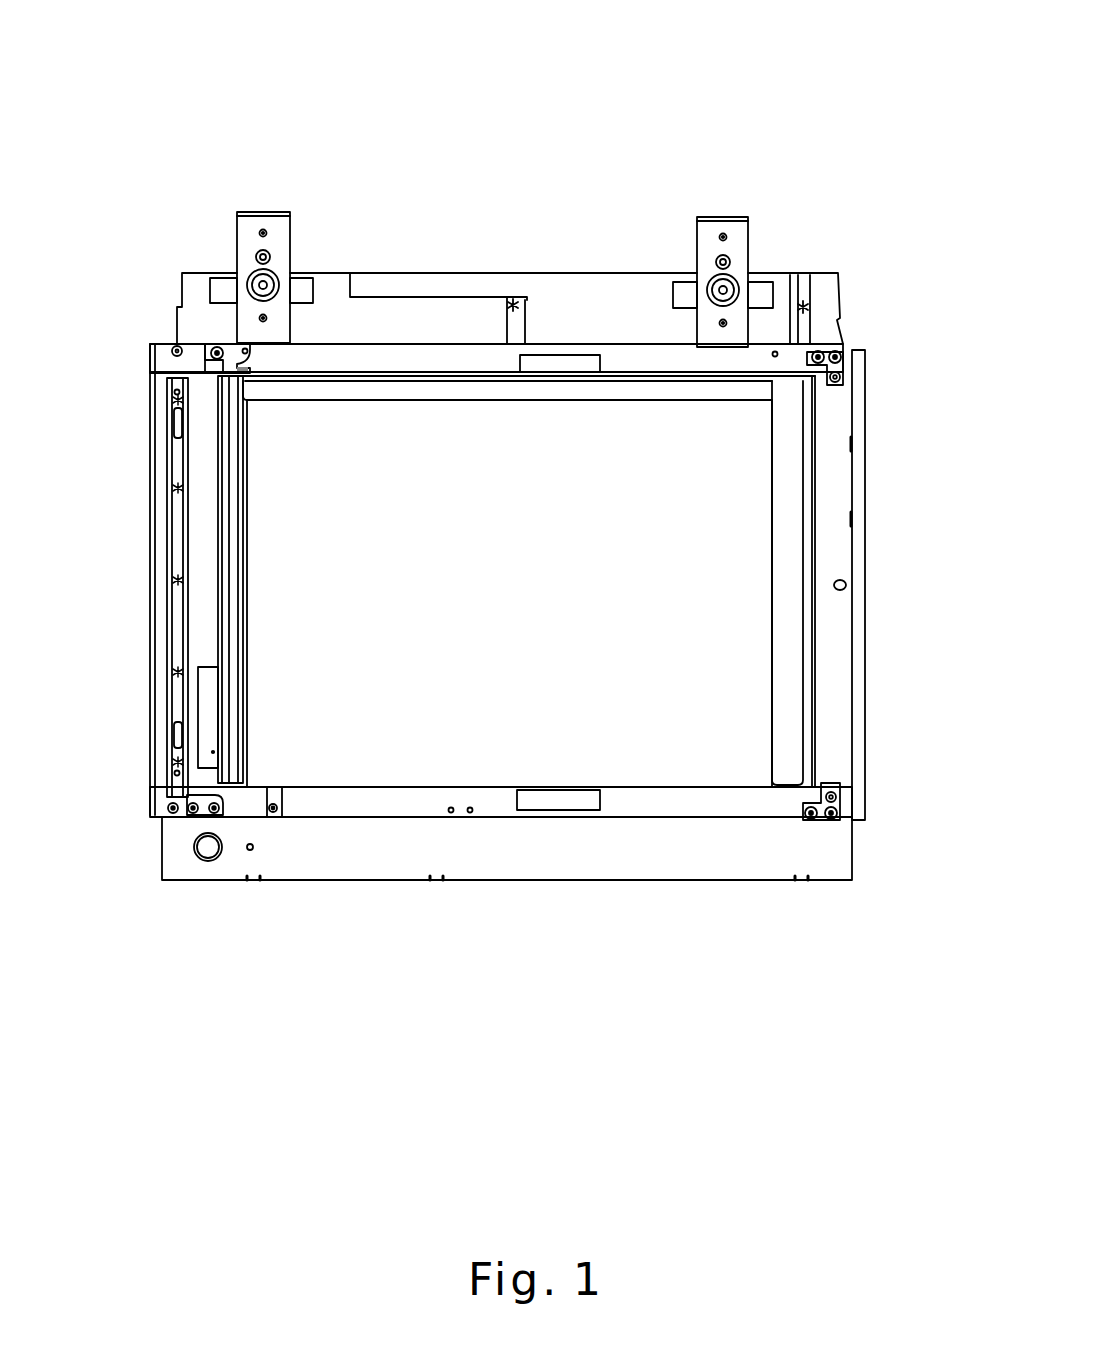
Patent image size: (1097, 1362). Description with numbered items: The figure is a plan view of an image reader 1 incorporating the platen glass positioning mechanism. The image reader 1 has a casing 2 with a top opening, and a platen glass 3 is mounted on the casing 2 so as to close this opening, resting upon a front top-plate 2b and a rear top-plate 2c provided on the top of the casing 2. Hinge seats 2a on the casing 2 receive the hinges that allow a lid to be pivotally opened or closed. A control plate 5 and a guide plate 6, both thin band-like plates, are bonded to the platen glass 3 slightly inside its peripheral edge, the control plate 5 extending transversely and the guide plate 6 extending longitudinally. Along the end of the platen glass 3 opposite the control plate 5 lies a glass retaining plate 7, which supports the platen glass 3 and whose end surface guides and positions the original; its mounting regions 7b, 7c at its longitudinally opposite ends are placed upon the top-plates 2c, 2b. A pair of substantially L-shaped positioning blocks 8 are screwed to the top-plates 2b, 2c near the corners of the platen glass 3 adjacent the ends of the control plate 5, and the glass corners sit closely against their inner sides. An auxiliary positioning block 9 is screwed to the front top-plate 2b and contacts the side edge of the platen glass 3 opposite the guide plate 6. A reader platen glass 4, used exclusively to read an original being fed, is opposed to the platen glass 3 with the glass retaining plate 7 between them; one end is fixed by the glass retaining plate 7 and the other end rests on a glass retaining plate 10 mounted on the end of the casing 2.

The image reader 1 is at (838, 258).
The casing 2 is at (835, 492).
The hinge seats 2a is at (268, 228).
The front top-plate 2b is at (436, 808).
The rear top-plate 2c is at (447, 358).
The platen glass 3 is at (597, 418).
The reader platen glass 4 is at (205, 620).
The control plate 5 is at (790, 722).
The guide plate 6 is at (678, 397).
The glass retaining plate 7 is at (228, 552).
The mounting region 7b is at (213, 370).
The mounting region 7c is at (210, 812).
The positioning blocks 8 is at (835, 352).
The auxiliary positioning block 9 is at (275, 812).
The glass retaining plate 10 is at (177, 527).